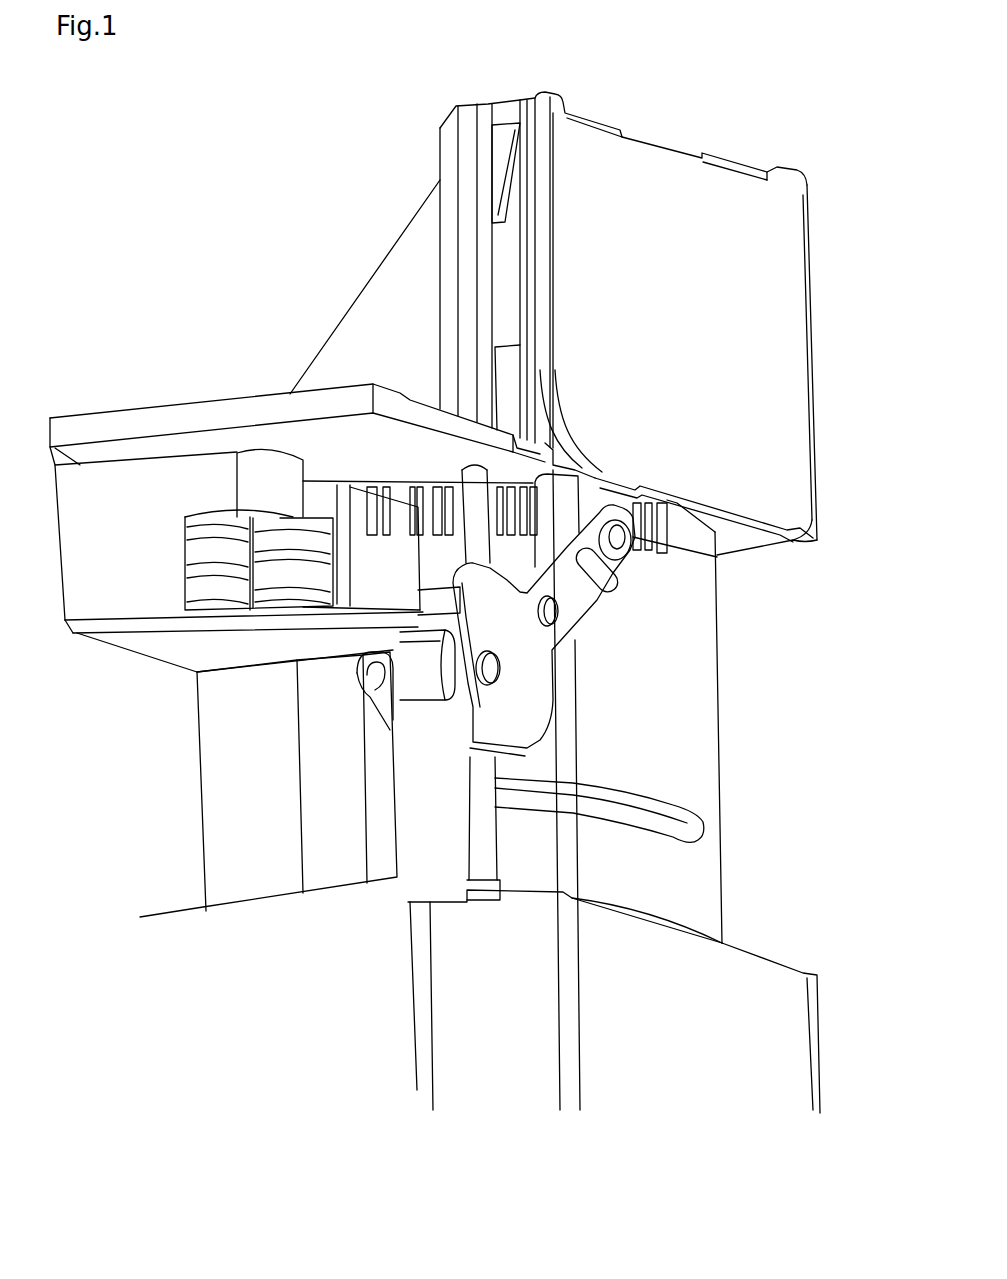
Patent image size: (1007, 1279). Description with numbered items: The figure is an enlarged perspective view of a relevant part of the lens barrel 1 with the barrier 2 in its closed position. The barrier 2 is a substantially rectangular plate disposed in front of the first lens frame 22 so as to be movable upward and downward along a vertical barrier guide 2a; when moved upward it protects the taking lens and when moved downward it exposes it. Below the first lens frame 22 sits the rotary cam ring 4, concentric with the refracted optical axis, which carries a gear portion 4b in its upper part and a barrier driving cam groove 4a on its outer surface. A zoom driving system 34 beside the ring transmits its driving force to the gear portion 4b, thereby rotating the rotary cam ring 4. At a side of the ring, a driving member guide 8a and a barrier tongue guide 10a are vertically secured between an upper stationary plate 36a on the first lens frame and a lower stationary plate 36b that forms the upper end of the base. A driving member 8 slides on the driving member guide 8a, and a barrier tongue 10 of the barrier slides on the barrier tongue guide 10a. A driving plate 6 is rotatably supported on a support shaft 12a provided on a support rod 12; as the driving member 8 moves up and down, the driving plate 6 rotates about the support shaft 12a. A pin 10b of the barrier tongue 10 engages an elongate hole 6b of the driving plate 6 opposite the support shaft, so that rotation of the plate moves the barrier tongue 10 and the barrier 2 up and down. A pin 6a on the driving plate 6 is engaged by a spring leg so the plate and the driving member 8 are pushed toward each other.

The lens barrel 1 is at (727, 100).
The barrier 2 is at (775, 262).
The barrier guide 2a is at (545, 405).
The rotary cam ring 4 is at (703, 682).
The barrier driving cam groove 4a is at (690, 820).
The gear portion 4b is at (717, 561).
The driving plate 6 is at (530, 722).
The pin 6a is at (557, 613).
The elongate hole 6b is at (590, 576).
The driving member 8 is at (527, 745).
The driving member guide 8a is at (482, 878).
The barrier tongue 10 is at (563, 497).
The barrier tongue guide 10a is at (573, 855).
The pin 10b is at (612, 545).
The support rod 12 is at (410, 810).
The support shaft 12a is at (445, 681).
The first lens frame 22 is at (385, 302).
The zoom driving system 34 is at (85, 536).
The upper stationary plate 36a is at (232, 408).
The lower stationary plate 36b is at (580, 912).